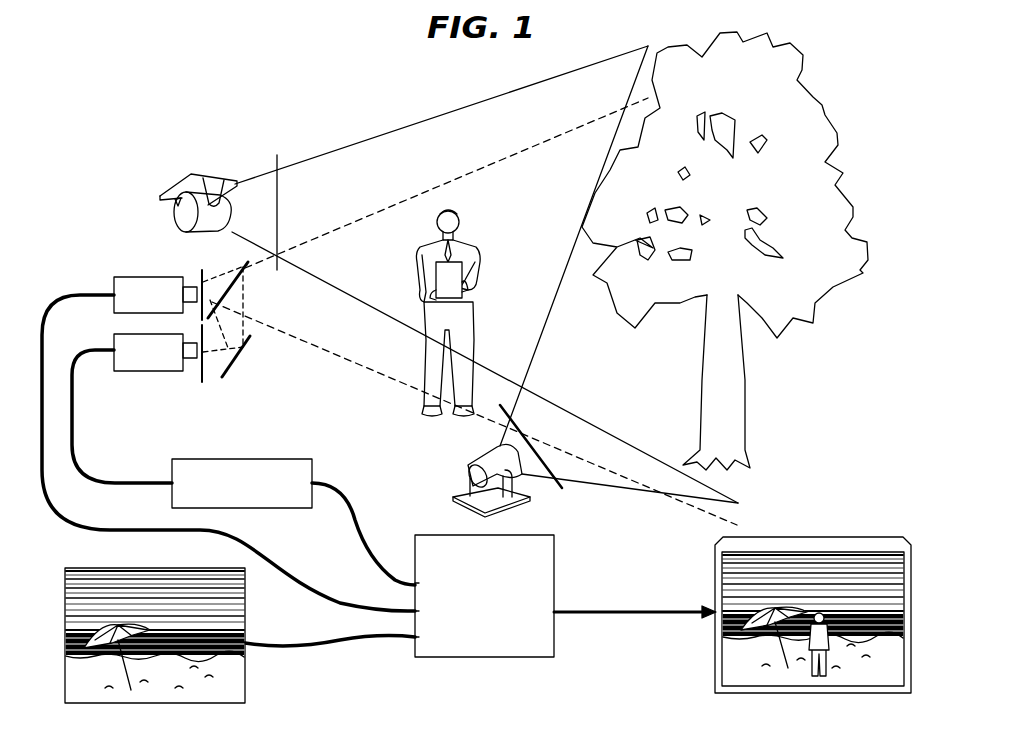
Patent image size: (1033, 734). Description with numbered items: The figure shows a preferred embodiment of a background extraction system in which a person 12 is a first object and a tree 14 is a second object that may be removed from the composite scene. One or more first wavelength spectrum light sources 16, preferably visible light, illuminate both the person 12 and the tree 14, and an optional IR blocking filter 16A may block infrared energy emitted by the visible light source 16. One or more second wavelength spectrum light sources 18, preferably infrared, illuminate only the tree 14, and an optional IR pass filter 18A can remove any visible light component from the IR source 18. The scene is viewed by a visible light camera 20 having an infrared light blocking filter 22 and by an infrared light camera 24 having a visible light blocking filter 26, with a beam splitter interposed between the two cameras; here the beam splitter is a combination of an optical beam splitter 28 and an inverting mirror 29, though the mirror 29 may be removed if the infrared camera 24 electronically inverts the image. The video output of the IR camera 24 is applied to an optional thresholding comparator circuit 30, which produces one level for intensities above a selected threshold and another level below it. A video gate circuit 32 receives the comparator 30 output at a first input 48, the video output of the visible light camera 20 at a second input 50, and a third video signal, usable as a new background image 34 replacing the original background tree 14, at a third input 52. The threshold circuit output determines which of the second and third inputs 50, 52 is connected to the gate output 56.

The person 12 is at (461, 234).
The tree 14 is at (743, 376).
The first wavelength spectrum light source 16 is at (214, 173).
The IR blocking filter 16A is at (279, 165).
The second wavelength spectrum light source 18 is at (455, 499).
The IR pass filter 18A is at (565, 490).
The visible light camera 20 is at (139, 277).
The infrared light blocking filter 22 is at (201, 275).
The infrared light camera 24 is at (141, 372).
The visible light blocking filter 26 is at (201, 378).
The optical beam splitter 28 is at (242, 268).
The inverting mirror 29 is at (245, 352).
The thresholding comparator circuit 30 is at (248, 459).
The video gate circuit 32 is at (565, 596).
The new background image 34 is at (247, 621).
The first input 48 is at (427, 589).
The second input 50 is at (427, 615).
The third input 52 is at (427, 641).
The gate output 56 is at (621, 615).